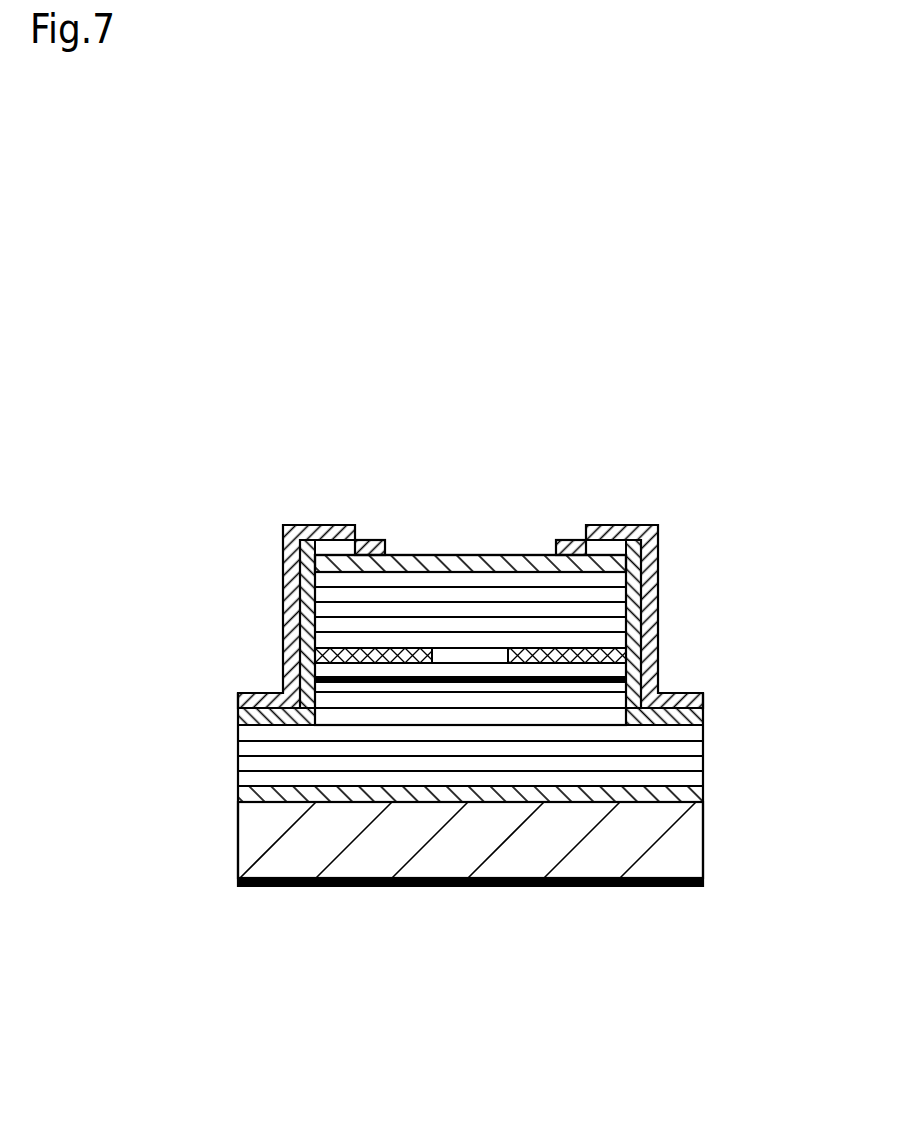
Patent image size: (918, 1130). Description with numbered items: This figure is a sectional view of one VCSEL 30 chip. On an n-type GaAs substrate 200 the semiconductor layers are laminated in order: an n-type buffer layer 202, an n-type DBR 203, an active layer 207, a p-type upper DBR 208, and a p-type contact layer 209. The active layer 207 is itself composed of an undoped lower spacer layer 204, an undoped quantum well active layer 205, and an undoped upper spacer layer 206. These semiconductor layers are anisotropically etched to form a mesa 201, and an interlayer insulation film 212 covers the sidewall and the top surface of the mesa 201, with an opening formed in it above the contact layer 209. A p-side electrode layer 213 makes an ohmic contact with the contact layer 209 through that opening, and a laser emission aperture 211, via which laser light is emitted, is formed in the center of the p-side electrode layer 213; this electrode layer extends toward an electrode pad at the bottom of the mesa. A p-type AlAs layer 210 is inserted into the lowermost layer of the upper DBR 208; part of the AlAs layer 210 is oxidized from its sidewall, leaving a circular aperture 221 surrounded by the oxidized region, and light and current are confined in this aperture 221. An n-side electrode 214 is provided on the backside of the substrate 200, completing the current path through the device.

The VCSEL 30 is at (492, 438).
The n-type GaAs substrate 200 is at (673, 845).
The mesa 201 is at (275, 572).
The n-type buffer layer 202 is at (678, 795).
The n-type DBR 203 is at (592, 705).
The undoped lower spacer layer 204 is at (612, 700).
The undoped quantum well active layer 205 is at (612, 680).
The undoped upper spacer layer 206 is at (612, 669).
The active layer 207 is at (835, 602).
The p-type upper DBR 208 is at (592, 643).
The p-type contact layer 209 is at (640, 552).
The p-type AlAs layer 210 is at (635, 650).
The laser emission aperture 211 is at (417, 540).
The interlayer insulation film 212 is at (648, 540).
The p-side electrode layer 213 is at (608, 525).
The n-side electrode 214 is at (703, 883).
The aperture 221 is at (463, 655).